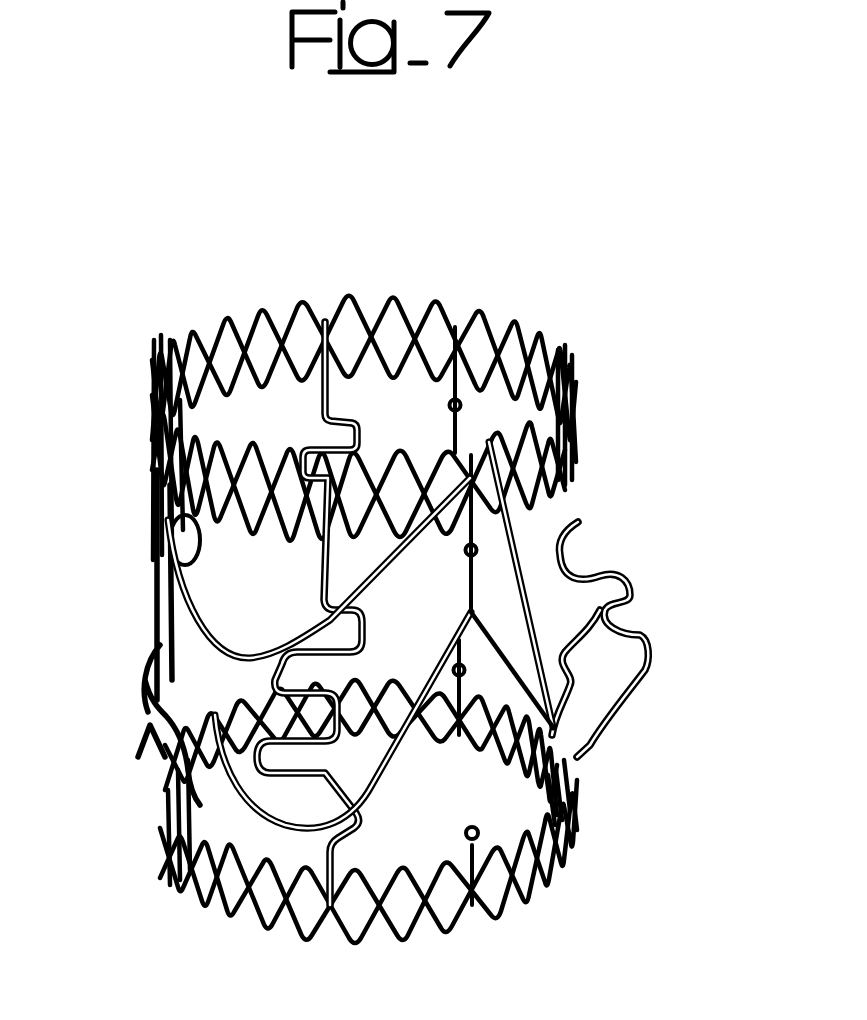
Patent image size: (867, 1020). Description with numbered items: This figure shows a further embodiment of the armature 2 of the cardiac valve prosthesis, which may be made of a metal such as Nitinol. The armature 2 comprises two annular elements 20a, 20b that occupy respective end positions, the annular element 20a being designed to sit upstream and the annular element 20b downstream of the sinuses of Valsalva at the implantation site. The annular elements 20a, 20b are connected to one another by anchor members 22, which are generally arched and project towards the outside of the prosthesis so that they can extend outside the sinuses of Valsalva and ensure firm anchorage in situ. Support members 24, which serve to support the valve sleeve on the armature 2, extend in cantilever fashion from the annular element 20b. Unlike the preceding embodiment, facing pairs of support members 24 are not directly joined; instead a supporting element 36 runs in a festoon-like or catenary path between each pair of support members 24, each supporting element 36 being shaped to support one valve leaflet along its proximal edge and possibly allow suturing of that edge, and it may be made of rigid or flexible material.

The armature 2 is at (637, 424).
The annular element 20a is at (583, 842).
The annular element 20b is at (140, 380).
The anchor member 22 is at (322, 420).
The support member 24 is at (170, 462).
The supporting element 36 is at (242, 652).